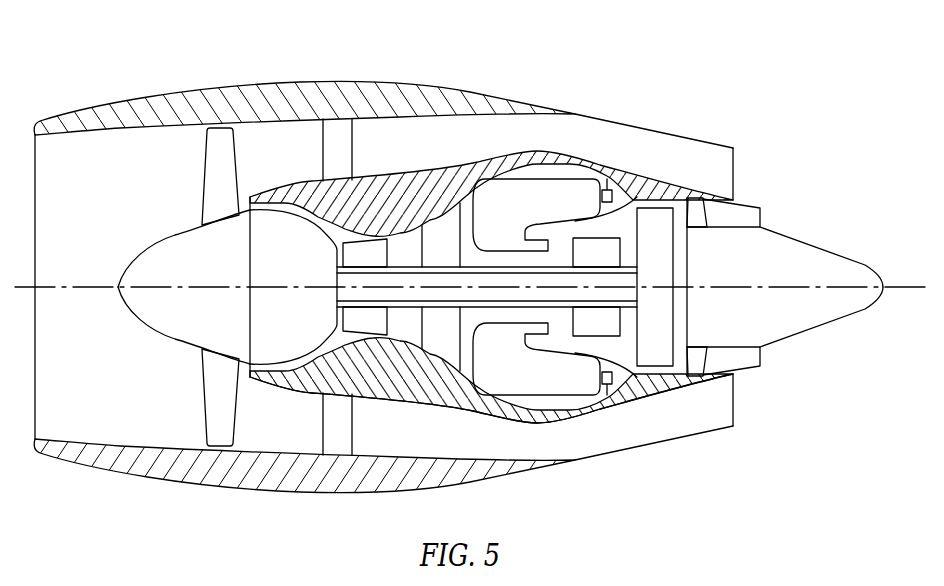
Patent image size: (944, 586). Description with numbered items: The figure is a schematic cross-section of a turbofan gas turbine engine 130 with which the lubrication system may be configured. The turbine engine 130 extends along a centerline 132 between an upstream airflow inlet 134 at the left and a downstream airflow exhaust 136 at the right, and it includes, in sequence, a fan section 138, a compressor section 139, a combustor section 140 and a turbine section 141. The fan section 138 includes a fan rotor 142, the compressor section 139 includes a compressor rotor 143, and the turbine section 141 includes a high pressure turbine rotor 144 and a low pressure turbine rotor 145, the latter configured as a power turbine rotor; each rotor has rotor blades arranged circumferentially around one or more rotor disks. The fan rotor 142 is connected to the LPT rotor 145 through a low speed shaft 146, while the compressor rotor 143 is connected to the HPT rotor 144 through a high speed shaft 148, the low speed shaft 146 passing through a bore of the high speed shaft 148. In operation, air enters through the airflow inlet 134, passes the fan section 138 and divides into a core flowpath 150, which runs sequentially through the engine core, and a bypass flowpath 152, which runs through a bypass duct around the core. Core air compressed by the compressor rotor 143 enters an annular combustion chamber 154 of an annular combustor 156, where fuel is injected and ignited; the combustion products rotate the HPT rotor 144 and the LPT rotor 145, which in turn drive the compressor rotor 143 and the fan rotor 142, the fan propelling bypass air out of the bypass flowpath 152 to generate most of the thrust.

The turbofan gas turbine engine 130 is at (662, 96).
The centerline 132 is at (892, 284).
The upstream airflow inlet 134 is at (38, 188).
The downstream airflow exhaust 136 is at (762, 216).
The fan section 138 is at (167, 163).
The compressor section 139 is at (403, 252).
The combustor section 140 is at (535, 176).
The turbine section 141 is at (625, 229).
The fan rotor 142 is at (160, 338).
The compressor rotor 143 is at (371, 349).
The high pressure turbine rotor 144 is at (640, 323).
The low pressure turbine rotor 145 is at (680, 297).
The low speed shaft 146 is at (345, 297).
The high speed shaft 148 is at (470, 262).
The core flowpath 150 is at (722, 215).
The bypass flowpath 152 is at (700, 170).
The annular combustion chamber 154 is at (565, 393).
The annular combustor 156 is at (522, 396).